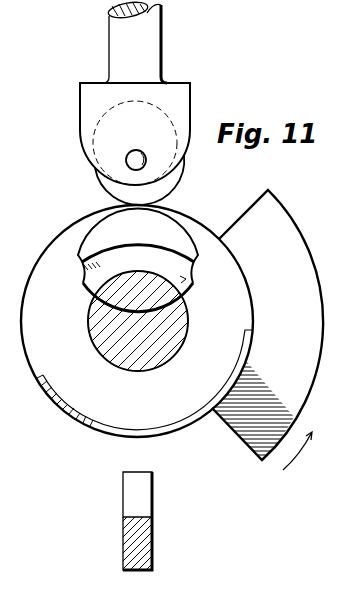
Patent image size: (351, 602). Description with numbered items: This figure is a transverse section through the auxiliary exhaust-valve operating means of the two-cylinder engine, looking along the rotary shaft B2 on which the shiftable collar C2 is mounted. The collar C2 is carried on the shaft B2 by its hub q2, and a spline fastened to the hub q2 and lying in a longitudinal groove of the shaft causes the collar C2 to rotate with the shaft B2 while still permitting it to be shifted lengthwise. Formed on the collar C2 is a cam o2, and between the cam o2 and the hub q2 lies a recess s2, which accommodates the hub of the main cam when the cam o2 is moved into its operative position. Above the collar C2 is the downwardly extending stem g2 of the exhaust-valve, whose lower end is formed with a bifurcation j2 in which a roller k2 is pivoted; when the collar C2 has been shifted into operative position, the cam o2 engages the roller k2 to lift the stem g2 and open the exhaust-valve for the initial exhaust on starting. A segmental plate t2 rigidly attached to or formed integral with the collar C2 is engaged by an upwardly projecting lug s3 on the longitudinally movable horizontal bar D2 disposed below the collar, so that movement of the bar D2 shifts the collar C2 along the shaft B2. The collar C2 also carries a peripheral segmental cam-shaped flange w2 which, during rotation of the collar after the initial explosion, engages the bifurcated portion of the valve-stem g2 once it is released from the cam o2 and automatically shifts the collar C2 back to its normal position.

The valve-stem g2 is at (161, 52).
The roller k2 is at (170, 185).
The bifurcation j2 is at (135, 143).
The collar C2 is at (44, 251).
The cam o2 is at (138, 246).
The recess s2 is at (138, 257).
The hub q2 is at (203, 318).
The shaft B2 is at (123, 305).
The segmental plate t2 is at (261, 330).
The peripheral segmental cam-shaped flange w2 is at (97, 432).
The lug s3 is at (152, 490).
The bar D2 is at (153, 528).